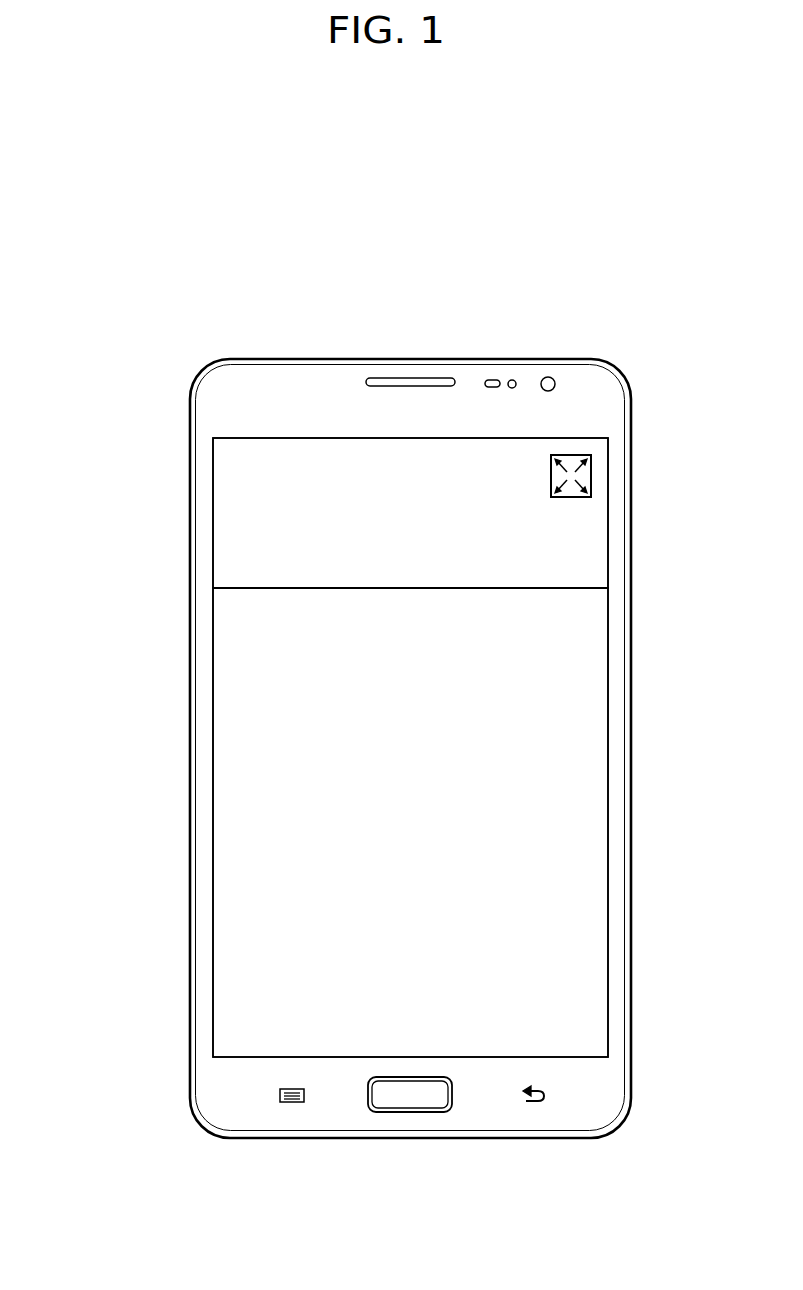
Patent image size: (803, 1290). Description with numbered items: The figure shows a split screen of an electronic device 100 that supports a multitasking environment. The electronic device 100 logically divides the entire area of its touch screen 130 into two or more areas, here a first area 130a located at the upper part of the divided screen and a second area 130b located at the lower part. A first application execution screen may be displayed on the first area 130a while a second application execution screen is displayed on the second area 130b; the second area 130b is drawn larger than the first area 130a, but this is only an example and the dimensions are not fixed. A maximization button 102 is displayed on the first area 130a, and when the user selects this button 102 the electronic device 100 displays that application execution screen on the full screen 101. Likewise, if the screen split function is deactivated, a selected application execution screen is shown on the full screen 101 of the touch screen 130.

The electronic device 100 is at (632, 413).
The full screen 101 is at (608, 543).
The maximization button 102 is at (591, 474).
The touch screen 130 is at (97, 520).
The first area 130a is at (213, 528).
The second area 130b is at (213, 850).